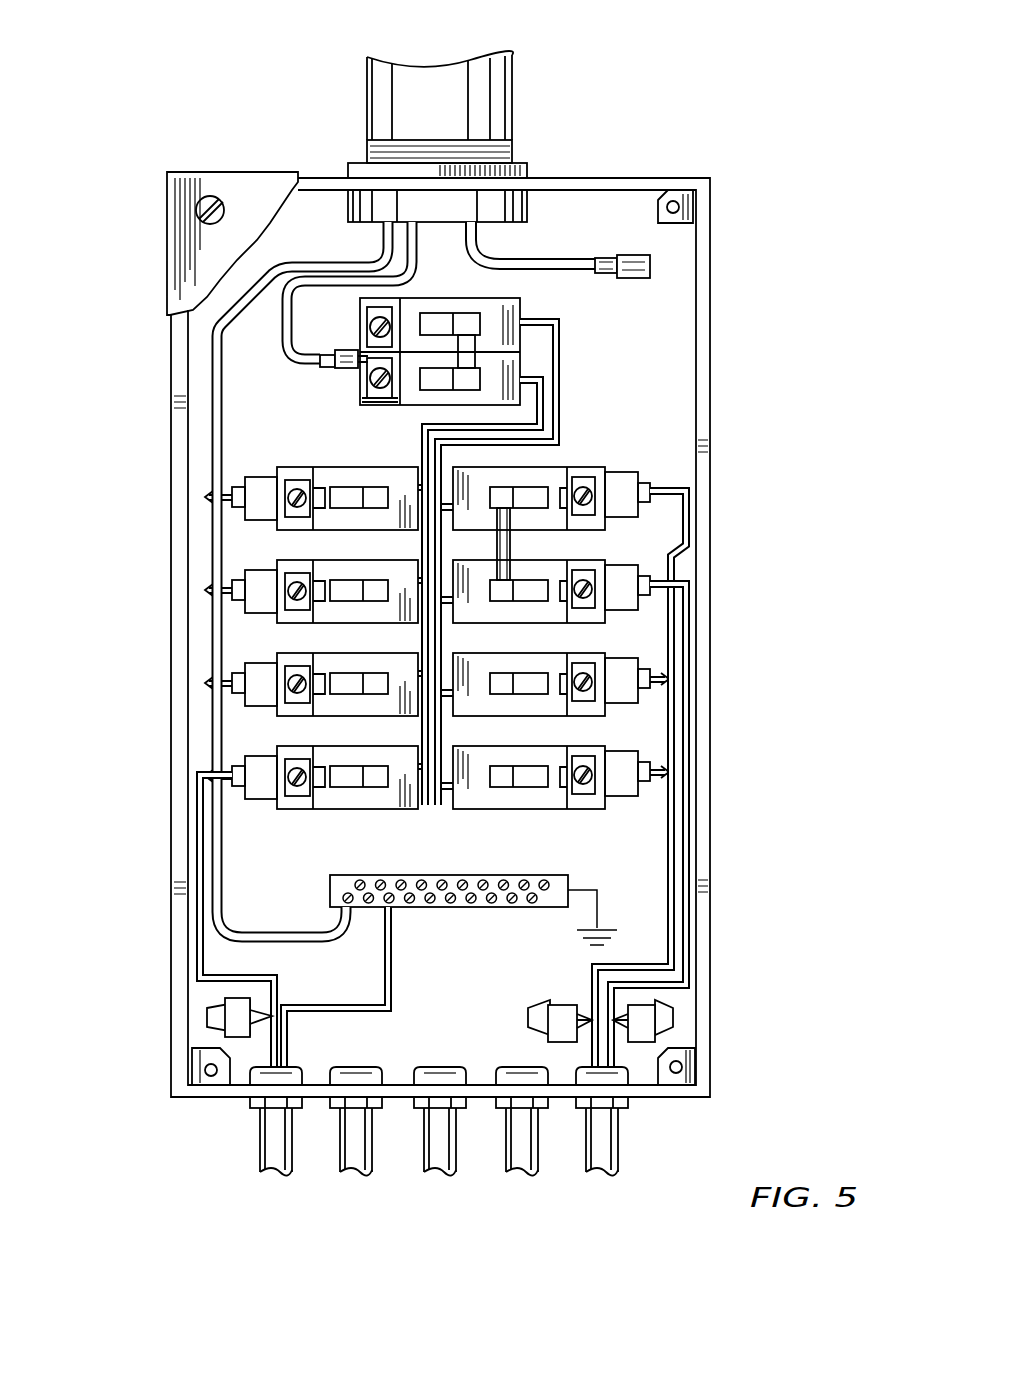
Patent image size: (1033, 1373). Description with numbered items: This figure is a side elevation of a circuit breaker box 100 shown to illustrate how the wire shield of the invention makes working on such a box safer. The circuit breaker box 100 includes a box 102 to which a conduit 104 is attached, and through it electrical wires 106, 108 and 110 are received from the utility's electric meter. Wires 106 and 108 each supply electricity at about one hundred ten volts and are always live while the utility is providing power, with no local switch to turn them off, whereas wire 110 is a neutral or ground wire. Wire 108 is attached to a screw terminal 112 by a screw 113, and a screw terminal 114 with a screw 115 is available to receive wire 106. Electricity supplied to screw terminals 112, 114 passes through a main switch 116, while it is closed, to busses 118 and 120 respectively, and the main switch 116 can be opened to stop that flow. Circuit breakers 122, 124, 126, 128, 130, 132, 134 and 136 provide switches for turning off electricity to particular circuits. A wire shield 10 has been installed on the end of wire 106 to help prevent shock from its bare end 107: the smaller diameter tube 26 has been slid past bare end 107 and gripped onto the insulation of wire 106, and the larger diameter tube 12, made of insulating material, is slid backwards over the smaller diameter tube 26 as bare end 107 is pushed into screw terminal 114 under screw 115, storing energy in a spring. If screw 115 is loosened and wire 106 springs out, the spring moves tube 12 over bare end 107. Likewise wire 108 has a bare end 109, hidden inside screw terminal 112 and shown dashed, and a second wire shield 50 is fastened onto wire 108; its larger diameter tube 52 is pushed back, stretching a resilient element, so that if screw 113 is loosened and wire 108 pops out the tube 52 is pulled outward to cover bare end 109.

The wire shield 10 is at (650, 262).
The larger diameter tube 12 is at (693, 190).
The smaller diameter tube 26 is at (612, 258).
The wire shield 50 is at (320, 362).
The larger diameter tube 52 is at (312, 348).
The circuit breaker box 100 is at (690, 122).
The box 102 is at (712, 672).
The conduit 104 is at (470, 62).
The electrical wire 106 is at (530, 262).
The bare end 107 is at (640, 277).
The electrical wire 108 is at (345, 280).
The bare end 109 is at (370, 375).
The wire 110 is at (215, 540).
The screw terminal 112 is at (382, 405).
The screw 113 is at (375, 393).
The screw terminal 114 is at (370, 318).
The screw 115 is at (350, 353).
The main switch 116 is at (518, 343).
The bus 118 is at (542, 407).
The bus 120 is at (558, 368).
The circuit breaker 122 is at (345, 530).
The circuit breaker 124 is at (345, 623).
The circuit breaker 126 is at (345, 716).
The circuit breaker 128 is at (330, 808).
The circuit breaker 130 is at (553, 530).
The circuit breaker 132 is at (553, 623).
The circuit breaker 134 is at (553, 716).
The circuit breaker 136 is at (553, 808).